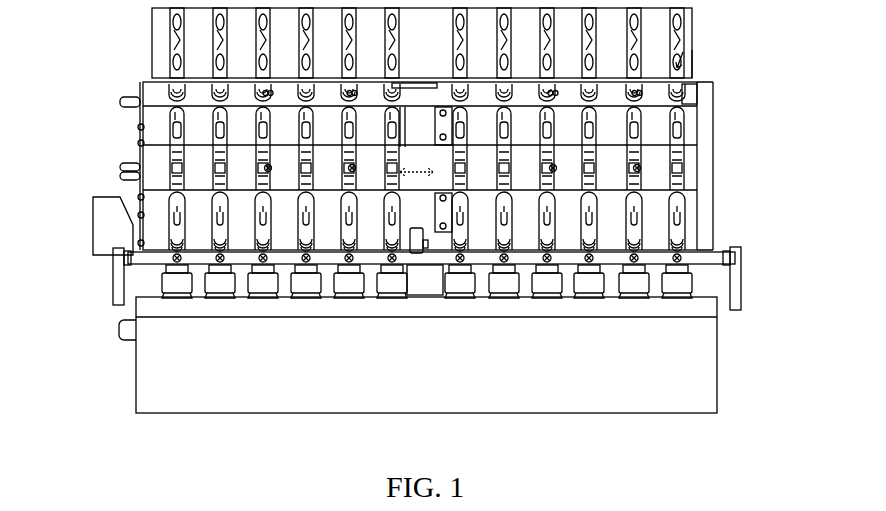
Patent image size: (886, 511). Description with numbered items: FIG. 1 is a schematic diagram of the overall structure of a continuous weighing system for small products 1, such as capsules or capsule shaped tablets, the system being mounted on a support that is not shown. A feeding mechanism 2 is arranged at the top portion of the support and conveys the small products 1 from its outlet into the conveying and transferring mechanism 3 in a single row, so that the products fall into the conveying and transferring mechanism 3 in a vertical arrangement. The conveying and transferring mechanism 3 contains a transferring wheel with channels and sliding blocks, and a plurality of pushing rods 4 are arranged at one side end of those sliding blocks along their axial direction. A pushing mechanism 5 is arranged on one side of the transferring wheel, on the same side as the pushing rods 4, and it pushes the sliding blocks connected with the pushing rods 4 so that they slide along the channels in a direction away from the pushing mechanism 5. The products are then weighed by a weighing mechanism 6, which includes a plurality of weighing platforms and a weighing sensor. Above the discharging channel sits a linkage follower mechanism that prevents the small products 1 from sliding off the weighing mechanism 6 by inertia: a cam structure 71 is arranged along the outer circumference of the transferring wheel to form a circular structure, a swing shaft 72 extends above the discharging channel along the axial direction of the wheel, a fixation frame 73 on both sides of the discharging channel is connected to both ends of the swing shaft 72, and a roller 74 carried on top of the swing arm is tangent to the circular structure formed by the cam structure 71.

The small products 1 is at (640, 31).
The feeding mechanism 2 is at (697, 61).
The conveying and transferring mechanism 3 is at (160, 134).
The pushing rods 4 is at (120, 101).
The pushing mechanism 5 is at (115, 226).
The weighing mechanism 6 is at (113, 290).
The cam structure 71 is at (420, 197).
The roller 74 is at (428, 231).
The swing shaft 72 is at (700, 260).
The fixation frame 73 is at (741, 293).